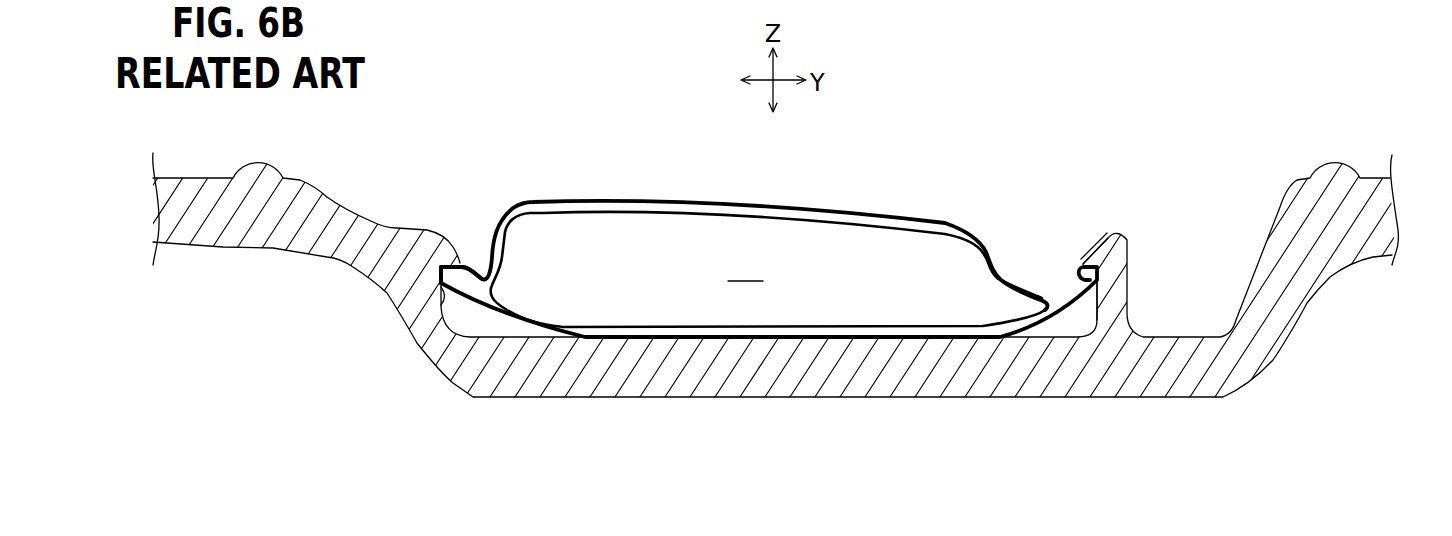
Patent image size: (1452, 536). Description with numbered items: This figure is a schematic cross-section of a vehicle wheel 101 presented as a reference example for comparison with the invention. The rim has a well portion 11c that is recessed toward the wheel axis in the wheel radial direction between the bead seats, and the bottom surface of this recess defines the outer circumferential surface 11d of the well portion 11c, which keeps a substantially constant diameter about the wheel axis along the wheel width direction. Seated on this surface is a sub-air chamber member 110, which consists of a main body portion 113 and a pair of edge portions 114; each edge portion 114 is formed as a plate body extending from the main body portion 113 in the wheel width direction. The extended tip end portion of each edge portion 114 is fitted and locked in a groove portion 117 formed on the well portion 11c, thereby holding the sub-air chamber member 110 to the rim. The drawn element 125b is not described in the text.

The vehicle wheel 101 is at (727, 280).
The sub-air chamber member 110 is at (727, 302).
The main body portion 113 is at (943, 223).
The edge portions 114 is at (463, 283).
The groove portion 117 is at (440, 309).
The seal base portion 125b is at (788, 337).
The well portion 11c is at (732, 301).
The outer circumferential surface 11d is at (1030, 337).